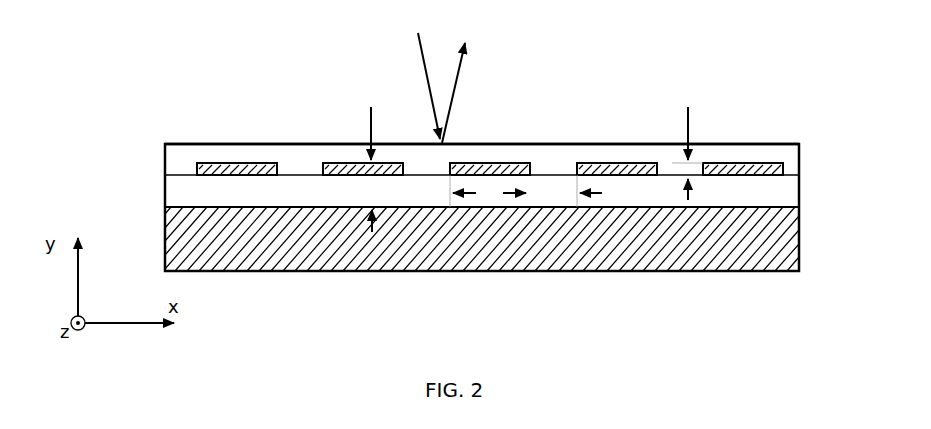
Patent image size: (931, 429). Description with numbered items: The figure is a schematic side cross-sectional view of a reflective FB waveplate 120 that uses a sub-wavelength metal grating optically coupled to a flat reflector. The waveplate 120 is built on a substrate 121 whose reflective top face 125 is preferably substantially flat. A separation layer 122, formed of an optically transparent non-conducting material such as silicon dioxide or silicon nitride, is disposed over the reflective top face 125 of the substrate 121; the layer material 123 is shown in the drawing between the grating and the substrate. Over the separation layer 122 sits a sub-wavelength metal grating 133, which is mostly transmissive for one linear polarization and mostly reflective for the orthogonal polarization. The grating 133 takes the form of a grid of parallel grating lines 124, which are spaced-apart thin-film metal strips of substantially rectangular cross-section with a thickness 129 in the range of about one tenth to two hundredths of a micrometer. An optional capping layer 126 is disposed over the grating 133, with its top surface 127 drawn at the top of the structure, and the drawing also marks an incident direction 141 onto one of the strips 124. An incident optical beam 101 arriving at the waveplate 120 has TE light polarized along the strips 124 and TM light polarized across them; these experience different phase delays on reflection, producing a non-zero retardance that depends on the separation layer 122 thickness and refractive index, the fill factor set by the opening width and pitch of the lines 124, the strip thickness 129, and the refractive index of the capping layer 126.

The incident optical beam 101 is at (425, 60).
The reflective FB WP 120 is at (158, 103).
The substrate 121 is at (164, 236).
The separation layer 122 is at (164, 193).
The layer material 123 is at (290, 190).
The grating lines 124 is at (228, 163).
The reflective top face 125 is at (785, 204).
The capping layer 126 is at (164, 160).
The top surface 127 is at (607, 159).
The thickness t 129 is at (688, 107).
The sub-wavelength metal grating 133 is at (794, 168).
The incident arrow 141 is at (371, 107).